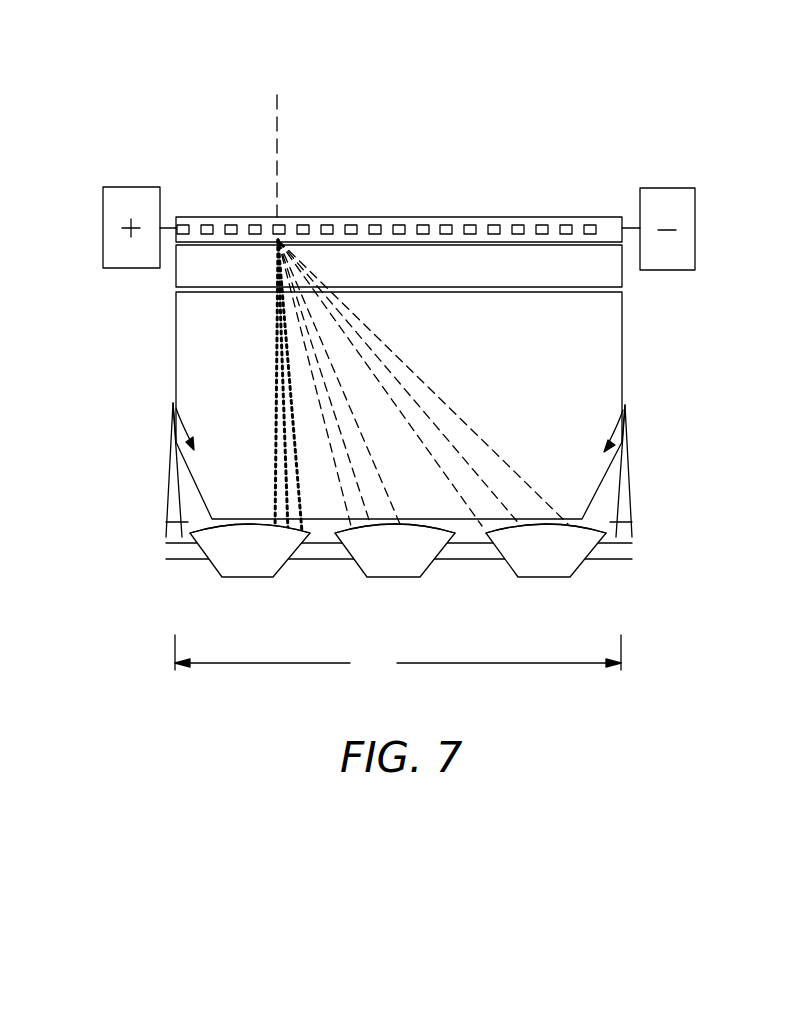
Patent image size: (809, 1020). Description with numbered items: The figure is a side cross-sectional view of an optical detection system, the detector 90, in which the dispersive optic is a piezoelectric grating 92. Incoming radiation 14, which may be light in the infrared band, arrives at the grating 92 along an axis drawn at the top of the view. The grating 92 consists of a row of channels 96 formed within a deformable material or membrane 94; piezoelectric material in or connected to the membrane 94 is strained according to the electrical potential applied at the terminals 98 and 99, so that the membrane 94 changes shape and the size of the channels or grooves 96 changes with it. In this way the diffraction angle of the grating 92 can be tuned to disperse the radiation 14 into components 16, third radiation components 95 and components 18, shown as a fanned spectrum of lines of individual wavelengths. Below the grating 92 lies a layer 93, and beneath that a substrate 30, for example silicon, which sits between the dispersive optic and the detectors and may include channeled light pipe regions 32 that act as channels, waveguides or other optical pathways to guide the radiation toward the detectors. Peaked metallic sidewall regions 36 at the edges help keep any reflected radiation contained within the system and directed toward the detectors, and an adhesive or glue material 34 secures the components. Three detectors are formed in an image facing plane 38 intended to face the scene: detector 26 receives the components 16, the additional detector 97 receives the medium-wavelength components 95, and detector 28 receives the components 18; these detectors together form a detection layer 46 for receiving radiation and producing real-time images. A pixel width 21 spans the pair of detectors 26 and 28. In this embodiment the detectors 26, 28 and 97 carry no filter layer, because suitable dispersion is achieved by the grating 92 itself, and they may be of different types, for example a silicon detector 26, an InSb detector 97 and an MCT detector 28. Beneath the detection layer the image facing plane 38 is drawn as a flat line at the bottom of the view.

The radiation 14 is at (277, 108).
The radiation components 16 is at (275, 395).
The radiation components 18 is at (440, 392).
The pixel width 21 is at (398, 656).
The detector 26 is at (282, 560).
The detector 28 is at (558, 578).
The substrate 30 is at (176, 320).
The light pipe regions 32 is at (170, 428).
The adhesive material 34 is at (178, 522).
The sidewall regions 36 is at (174, 496).
The image facing plane 38 is at (616, 560).
The detection layer 46 is at (226, 531).
The detector 90 is at (703, 173).
The piezoelectric grating 92 is at (593, 216).
The circuit board 93 is at (613, 278).
The deformable membrane 94 is at (520, 217).
The third radiation components 95 is at (375, 464).
The channels 96 is at (233, 223).
The detector 97 is at (395, 578).
The terminal 98 is at (138, 188).
The terminal 99 is at (692, 208).